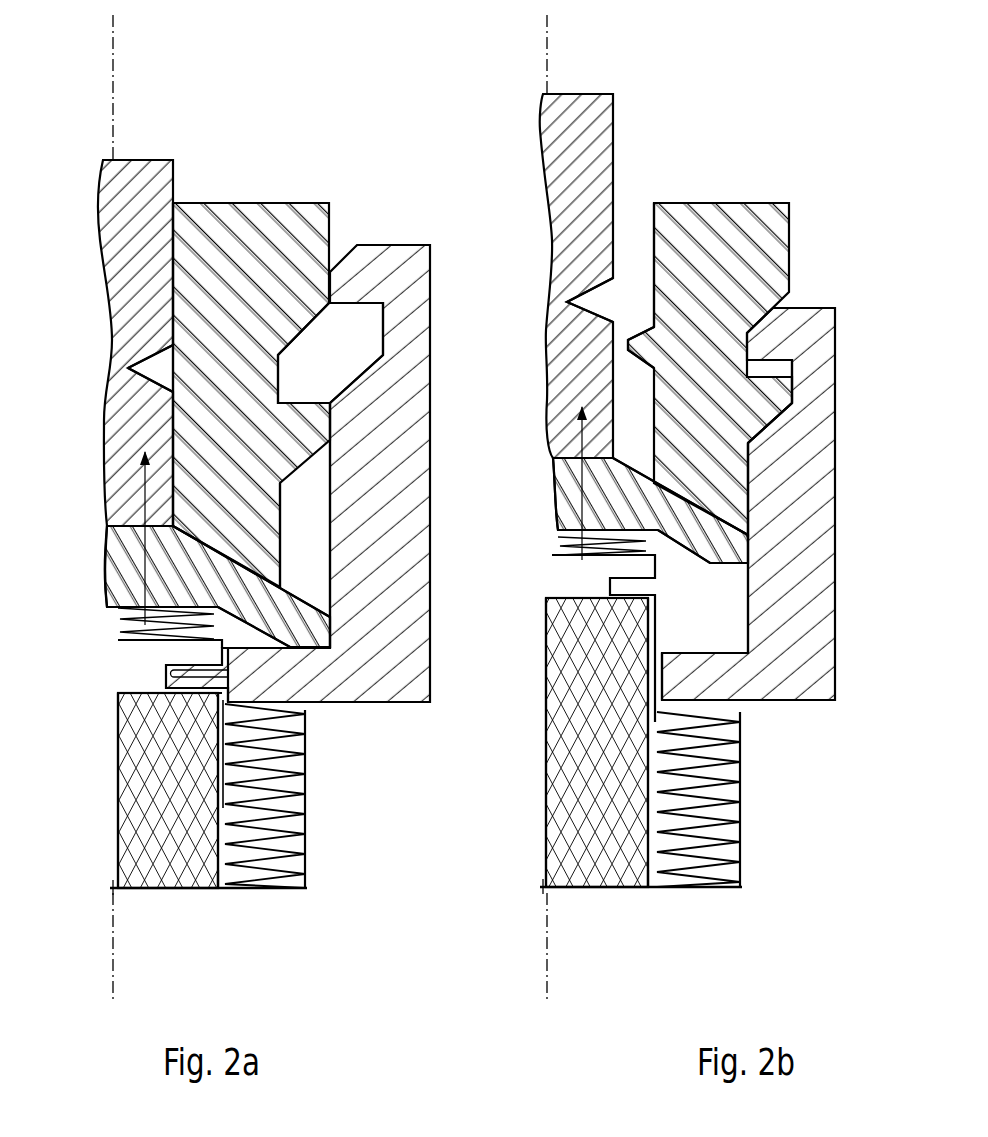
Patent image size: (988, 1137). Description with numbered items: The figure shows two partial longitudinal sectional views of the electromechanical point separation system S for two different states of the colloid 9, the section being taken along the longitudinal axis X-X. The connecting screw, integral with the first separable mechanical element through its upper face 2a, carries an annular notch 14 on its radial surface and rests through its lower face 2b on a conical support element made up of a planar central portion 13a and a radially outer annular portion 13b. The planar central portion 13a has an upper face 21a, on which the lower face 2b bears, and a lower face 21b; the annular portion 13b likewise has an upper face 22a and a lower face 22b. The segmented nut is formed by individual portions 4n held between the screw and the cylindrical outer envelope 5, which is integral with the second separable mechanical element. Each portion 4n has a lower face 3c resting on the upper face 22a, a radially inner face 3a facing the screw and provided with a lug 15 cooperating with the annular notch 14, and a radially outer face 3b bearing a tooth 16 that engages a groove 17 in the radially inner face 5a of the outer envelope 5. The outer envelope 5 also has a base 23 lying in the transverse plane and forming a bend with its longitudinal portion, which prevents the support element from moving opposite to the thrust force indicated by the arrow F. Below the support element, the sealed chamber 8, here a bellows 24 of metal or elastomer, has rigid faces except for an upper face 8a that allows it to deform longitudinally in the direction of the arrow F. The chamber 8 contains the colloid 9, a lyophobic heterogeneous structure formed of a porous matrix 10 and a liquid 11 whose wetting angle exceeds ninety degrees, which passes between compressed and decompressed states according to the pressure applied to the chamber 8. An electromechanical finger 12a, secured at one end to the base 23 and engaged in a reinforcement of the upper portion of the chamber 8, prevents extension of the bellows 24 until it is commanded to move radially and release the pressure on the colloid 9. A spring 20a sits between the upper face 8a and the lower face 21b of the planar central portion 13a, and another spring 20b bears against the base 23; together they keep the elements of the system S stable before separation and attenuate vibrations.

In FIG. 2A, the upper face 2a is at (150, 160).
In FIG. 2B, the upper face 2a is at (593, 94).
In FIG. 2A, the lower face 2b is at (130, 523).
In FIG. 2B, the lower face 2b is at (575, 458).
In FIG. 2A, the radially inner face 3a is at (165, 307).
In FIG. 2B, the radially inner face 3a is at (654, 253).
In FIG. 2A, the radially outer face 3b is at (292, 518).
In FIG. 2B, the radially outer face 3b is at (752, 483).
In FIG. 2A, the lower face 3c is at (288, 567).
In FIG. 2B, the lower face 3c is at (735, 540).
In FIG. 2A, the individual portions 4n is at (250, 203).
In FIG. 2B, the individual portions 4n is at (738, 203).
In FIG. 2A, the outer envelope 5 is at (430, 240).
In FIG. 2B, the outer envelope 5 is at (748, 504).
In FIG. 2A, the radially inner face 5a is at (333, 548).
In FIG. 2B, the radially inner face 5a is at (835, 548).
In FIG. 2A, the sealed chamber 8 is at (160, 890).
In FIG. 2B, the sealed chamber 8 is at (602, 889).
In FIG. 2A, the upper face 8a is at (123, 690).
In FIG. 2B, the upper face 8a is at (593, 597).
In FIG. 2A, the colloid 9 is at (123, 745).
In FIG. 2B, the colloid 9 is at (565, 732).
In FIG. 2A, the porous matrix 10 is at (136, 787).
In FIG. 2B, the porous matrix 10 is at (565, 771).
In FIG. 2A, the liquid 11 is at (136, 821).
In FIG. 2B, the liquid 11 is at (565, 805).
In FIG. 2A, the electromechanical finger 12a is at (172, 674).
In FIG. 2A, the planar central portion 13a is at (128, 562).
In FIG. 2B, the planar central portion 13a is at (570, 478).
In FIG. 2A, the annular portion 13b is at (288, 622).
In FIG. 2B, the annular portion 13b is at (750, 655).
In FIG. 2A, the annular notch 14 is at (126, 376).
In FIG. 2B, the annular notch 14 is at (595, 319).
In FIG. 2A, the lug 15 is at (160, 352).
In FIG. 2B, the lug 15 is at (640, 360).
In FIG. 2A, the tooth 16 is at (302, 402).
In FIG. 2B, the tooth 16 is at (793, 400).
In FIG. 2A, the groove 17 is at (384, 327).
In FIG. 2B, the groove 17 is at (793, 370).
In FIG. 2A, the spring 20a is at (120, 632).
In FIG. 2B, the spring 20a is at (563, 546).
In FIG. 2A, the spring 20b is at (290, 803).
In FIG. 2B, the spring 20b is at (720, 808).
In FIG. 2A, the upper face 21a is at (176, 549).
In FIG. 2B, the upper face 21a is at (594, 488).
In FIG. 2A, the lower face 21b is at (130, 600).
In FIG. 2B, the lower face 21b is at (570, 518).
In FIG. 2A, the upper face 22a is at (352, 581).
In FIG. 2B, the upper face 22a is at (767, 543).
In FIG. 2A, the lower face 22b is at (290, 668).
In FIG. 2B, the lower face 22b is at (750, 605).
In FIG. 2A, the base 23 is at (313, 648).
In FIG. 2B, the base 23 is at (727, 673).
In FIG. 2A, the bellows 24 is at (188, 894).
In FIG. 2B, the bellows 24 is at (624, 893).
In FIG. 2A, the system S is at (110, 124).
In FIG. 2B, the system S is at (768, 86).
In FIG. 2A, the longitudinal axis X is at (123, 510).
In FIG. 2B, the longitudinal axis X is at (558, 510).
In FIG. 2A, the arrow F is at (156, 532).
In FIG. 2B, the arrow F is at (593, 476).